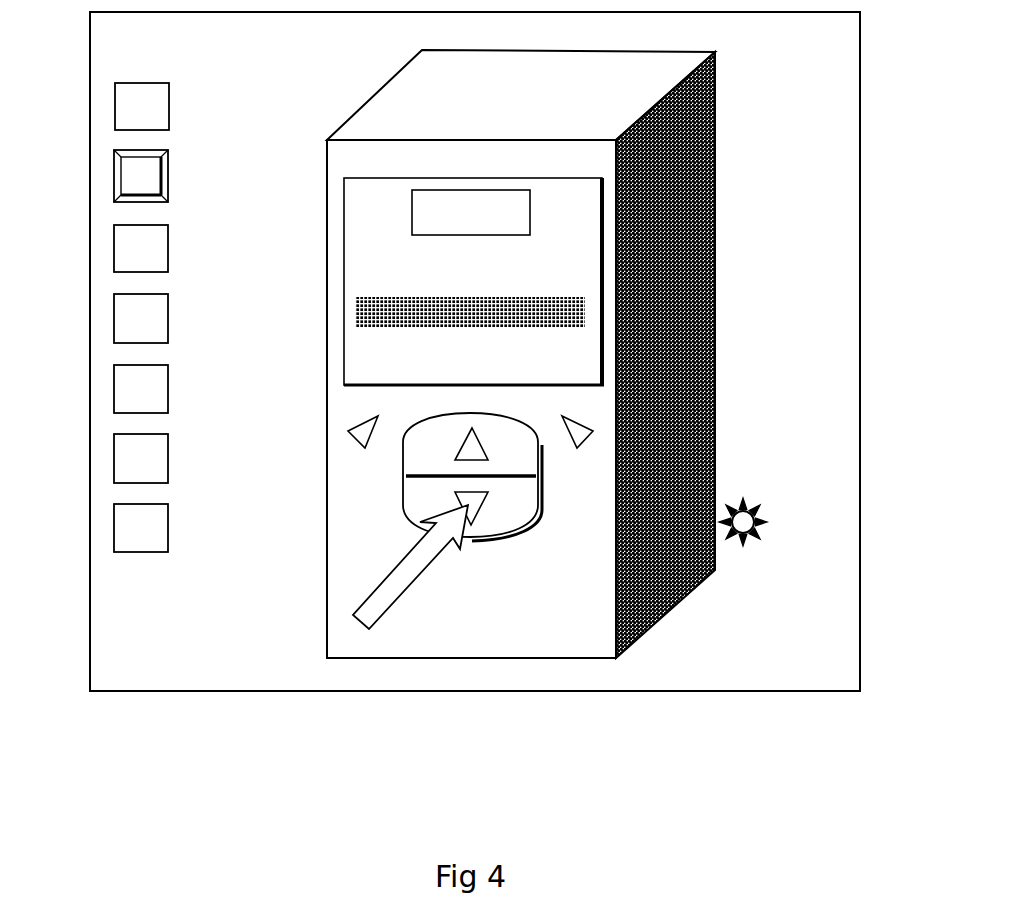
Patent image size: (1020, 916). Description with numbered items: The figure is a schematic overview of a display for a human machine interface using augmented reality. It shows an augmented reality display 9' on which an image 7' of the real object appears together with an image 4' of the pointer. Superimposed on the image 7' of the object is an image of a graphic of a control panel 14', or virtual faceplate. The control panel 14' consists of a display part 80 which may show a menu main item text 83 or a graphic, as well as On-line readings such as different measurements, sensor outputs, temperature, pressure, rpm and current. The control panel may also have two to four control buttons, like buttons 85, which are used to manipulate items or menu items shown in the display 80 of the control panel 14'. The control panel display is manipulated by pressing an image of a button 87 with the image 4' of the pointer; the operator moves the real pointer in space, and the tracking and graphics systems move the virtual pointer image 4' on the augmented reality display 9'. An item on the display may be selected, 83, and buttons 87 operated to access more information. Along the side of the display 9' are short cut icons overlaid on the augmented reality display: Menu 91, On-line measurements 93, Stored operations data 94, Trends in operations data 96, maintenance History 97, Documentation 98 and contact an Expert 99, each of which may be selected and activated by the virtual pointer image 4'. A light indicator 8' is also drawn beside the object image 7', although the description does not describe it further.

The Menu short cut icon 91 is at (142, 110).
The On-line measurements short cut icon 93 is at (125, 182).
The Stored operations data short cut icon 94 is at (123, 255).
The Trends in operations data short cut icon 96 is at (133, 308).
The maintenance History short cut icon 97 is at (125, 388).
The Documentation short cut icon 98 is at (127, 462).
The contact an Expert short cut icon 99 is at (127, 528).
The display part 80 is at (562, 203).
The menu main item text 83 is at (522, 233).
The control buttons 85 is at (583, 300).
The control panel 14' is at (641, 358).
The image of a button 87 is at (493, 505).
The light indicator 8' is at (823, 528).
The image of the object 7' is at (587, 404).
The augmented reality display 9' is at (475, 384).
The image of the pointer 4' is at (453, 630).